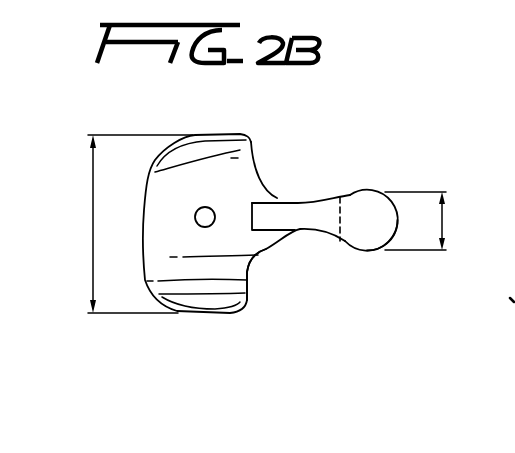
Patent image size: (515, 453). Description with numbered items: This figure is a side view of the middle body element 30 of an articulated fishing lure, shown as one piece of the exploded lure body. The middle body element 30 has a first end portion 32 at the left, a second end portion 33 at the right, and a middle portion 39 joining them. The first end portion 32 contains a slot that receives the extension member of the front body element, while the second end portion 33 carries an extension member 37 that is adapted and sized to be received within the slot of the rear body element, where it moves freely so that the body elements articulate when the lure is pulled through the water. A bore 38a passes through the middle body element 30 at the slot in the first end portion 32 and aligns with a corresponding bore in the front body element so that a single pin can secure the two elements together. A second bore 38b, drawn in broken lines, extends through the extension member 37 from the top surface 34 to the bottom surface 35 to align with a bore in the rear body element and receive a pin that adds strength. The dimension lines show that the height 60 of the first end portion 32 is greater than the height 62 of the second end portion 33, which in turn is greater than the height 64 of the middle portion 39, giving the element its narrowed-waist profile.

The middle body element 30 is at (352, 108).
The first end portion 32 is at (153, 158).
The second end portion 33 is at (389, 242).
The top surface 34 is at (274, 180).
The bottom surface 35 is at (267, 253).
The extension member 37 is at (377, 200).
The bore 38a is at (205, 227).
The second bore 38b is at (363, 188).
The middle portion 39 is at (310, 208).
The height of the first end portion 60 is at (93, 222).
The height of the second end portion 62 is at (443, 223).
The height of the middle portion 64 is at (254, 217).